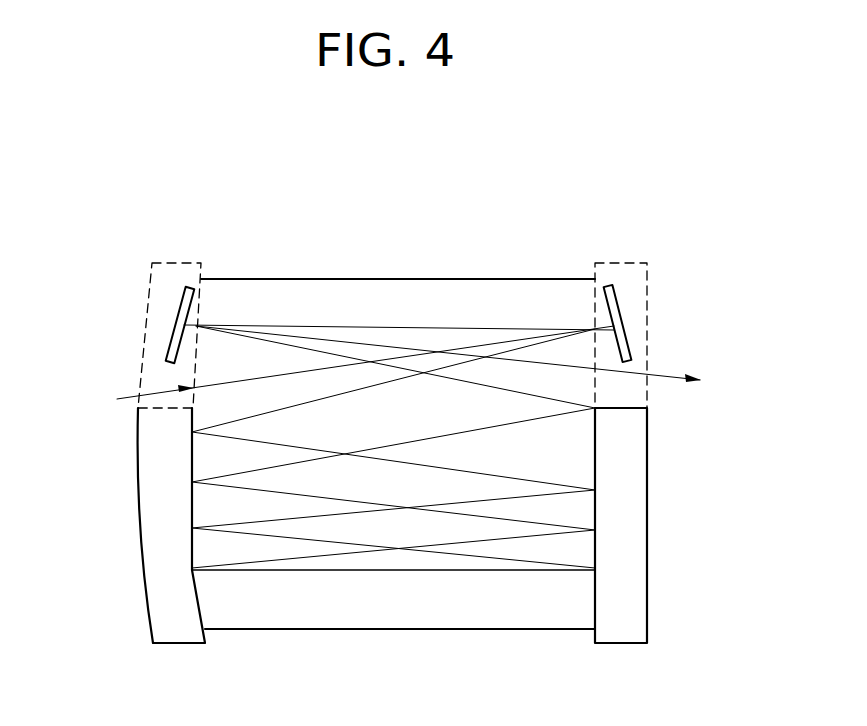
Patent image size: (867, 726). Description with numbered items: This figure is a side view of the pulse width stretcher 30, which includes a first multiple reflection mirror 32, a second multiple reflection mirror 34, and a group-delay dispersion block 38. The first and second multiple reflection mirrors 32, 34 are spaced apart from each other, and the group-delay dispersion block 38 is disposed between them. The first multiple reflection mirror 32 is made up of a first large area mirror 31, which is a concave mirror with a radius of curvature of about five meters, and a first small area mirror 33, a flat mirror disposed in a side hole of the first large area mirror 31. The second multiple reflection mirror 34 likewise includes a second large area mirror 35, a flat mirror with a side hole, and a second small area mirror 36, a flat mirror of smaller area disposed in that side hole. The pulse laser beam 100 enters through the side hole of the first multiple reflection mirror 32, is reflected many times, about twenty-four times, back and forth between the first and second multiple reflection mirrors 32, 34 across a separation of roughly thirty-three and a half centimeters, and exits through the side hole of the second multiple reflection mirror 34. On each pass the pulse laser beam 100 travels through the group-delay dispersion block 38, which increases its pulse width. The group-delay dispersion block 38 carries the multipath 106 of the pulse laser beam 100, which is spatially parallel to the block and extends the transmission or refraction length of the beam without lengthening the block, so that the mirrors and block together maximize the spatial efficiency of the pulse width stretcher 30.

The pulse width stretcher 30 is at (597, 175).
The first large area mirror 31 is at (153, 481).
The first multiple reflection mirror 32 is at (63, 315).
The first small area mirror 33 is at (178, 320).
The second multiple reflection mirror 34 is at (741, 313).
The second large area mirror 35 is at (648, 482).
The second small area mirror 36 is at (620, 322).
The group-delay dispersion block 38 is at (400, 278).
The pulse laser beam 100 is at (128, 398).
The multipath 106 is at (400, 570).